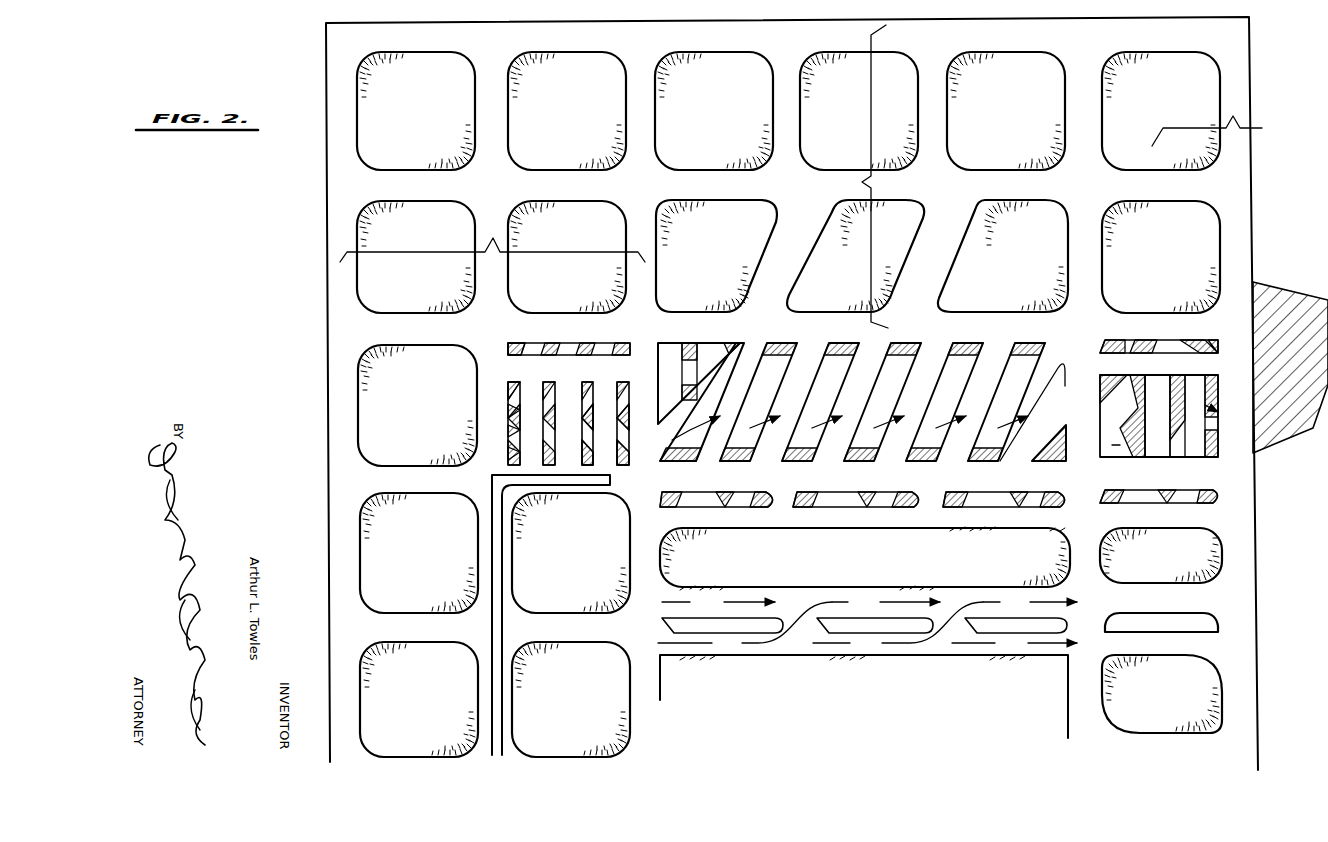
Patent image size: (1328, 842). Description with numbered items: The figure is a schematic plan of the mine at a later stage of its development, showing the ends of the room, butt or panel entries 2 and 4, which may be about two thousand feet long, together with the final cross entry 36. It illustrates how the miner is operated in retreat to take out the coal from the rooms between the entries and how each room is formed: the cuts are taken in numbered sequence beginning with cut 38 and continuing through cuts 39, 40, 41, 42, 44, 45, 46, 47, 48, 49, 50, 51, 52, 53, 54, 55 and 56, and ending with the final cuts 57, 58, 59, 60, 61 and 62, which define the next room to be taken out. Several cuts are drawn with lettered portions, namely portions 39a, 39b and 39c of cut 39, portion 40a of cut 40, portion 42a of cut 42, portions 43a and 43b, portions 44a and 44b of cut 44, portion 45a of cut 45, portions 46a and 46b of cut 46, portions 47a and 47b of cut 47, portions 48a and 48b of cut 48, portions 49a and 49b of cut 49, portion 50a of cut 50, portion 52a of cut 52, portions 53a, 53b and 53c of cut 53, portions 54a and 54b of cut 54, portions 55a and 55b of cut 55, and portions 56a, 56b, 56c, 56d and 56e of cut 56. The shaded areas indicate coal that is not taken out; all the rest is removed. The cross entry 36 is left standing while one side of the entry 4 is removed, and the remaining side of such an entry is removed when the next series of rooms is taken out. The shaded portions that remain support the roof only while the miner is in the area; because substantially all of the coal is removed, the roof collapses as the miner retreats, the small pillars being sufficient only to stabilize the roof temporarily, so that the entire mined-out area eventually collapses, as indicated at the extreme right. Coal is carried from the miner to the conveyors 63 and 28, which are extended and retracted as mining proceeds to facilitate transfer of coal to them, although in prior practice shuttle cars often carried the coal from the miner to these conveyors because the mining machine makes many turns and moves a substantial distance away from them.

The entry 2 is at (1207, 123).
The entry 4 is at (492, 244).
The conveyor 28 is at (497, 553).
The final cross entry 36 is at (860, 176).
The cut 38 is at (1069, 414).
The cut 39 is at (1195, 380).
The bar section 39a is at (1206, 346).
The bar section 39b is at (1150, 346).
The bar section 39c is at (1110, 346).
The cut 40 is at (1204, 416).
The block arrow 40a is at (1222, 412).
The cut 41 is at (1166, 420).
The cut 42 is at (1123, 416).
The block part 42a is at (1116, 446).
The bar section 43a is at (1140, 495).
The bar section 43b is at (1196, 495).
The cut 44 is at (1046, 452).
The bar section 44a is at (1040, 497).
The bar section 44b is at (984, 497).
The cut 45 is at (1055, 369).
The bar passage 45a is at (998, 426).
The cut 46 is at (994, 369).
The bar passage 46a is at (936, 426).
The bar section 46b is at (893, 497).
The cut 47 is at (930, 369).
The bar passage 47a is at (874, 426).
The bar section 47b is at (830, 495).
The cut 48 is at (868, 369).
The bar passage 48a is at (812, 426).
The bar section 48b is at (756, 497).
The cut 49 is at (806, 369).
The bar passage 49a is at (751, 426).
The bar section 49b is at (700, 495).
The cut 50 is at (750, 369).
The band passage 50a is at (680, 433).
The cut 51 is at (711, 355).
The cut 52 is at (676, 356).
The divider section 52a is at (690, 350).
The cut 53 is at (620, 374).
The bar section 53a is at (605, 344).
The bar section 53b is at (572, 331).
The bar section 53c is at (532, 344).
The cut 54 is at (612, 392).
The bar section 54a is at (629, 404).
The bar section 54b is at (629, 430).
The cut 55 is at (578, 389).
The bar section 55a is at (584, 414).
The bar section 55b is at (588, 445).
The cut 56 is at (522, 394).
The vertical bar 56a is at (550, 392).
The bar section 56b is at (518, 384).
The bar section 56c is at (512, 411).
The bar section 56d is at (548, 437).
The bar section 56e is at (512, 456).
The final cut 57 is at (722, 614).
The final cut 58 is at (745, 627).
The final cut 59 is at (878, 614).
The final cut 60 is at (898, 627).
The final cut 61 is at (1021, 614).
The final cut 62 is at (1014, 644).
The conveyor 63 is at (558, 478).